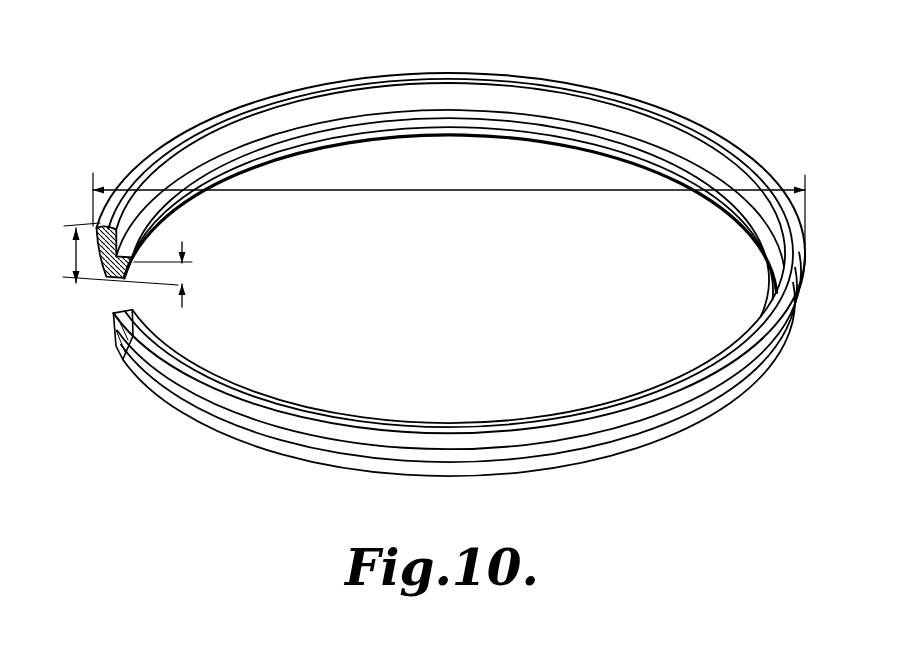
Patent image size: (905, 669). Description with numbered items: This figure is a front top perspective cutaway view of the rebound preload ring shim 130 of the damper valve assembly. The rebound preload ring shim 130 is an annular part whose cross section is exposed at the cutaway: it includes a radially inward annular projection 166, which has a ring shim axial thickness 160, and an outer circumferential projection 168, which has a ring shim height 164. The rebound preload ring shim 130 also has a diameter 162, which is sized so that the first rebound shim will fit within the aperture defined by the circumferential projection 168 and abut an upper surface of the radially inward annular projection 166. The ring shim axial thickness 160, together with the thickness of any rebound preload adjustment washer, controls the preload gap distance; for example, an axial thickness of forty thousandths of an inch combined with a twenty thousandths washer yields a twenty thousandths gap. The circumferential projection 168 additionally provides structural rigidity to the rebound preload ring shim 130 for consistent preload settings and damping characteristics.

The rebound preload ring shim 130 is at (451, 259).
The ring shim axial thickness 160 is at (190, 274).
The diameter 162 is at (447, 190).
The ring shim height 164 is at (74, 250).
The radially inward annular projection 166 is at (157, 212).
The circumferential projection 168 is at (178, 167).